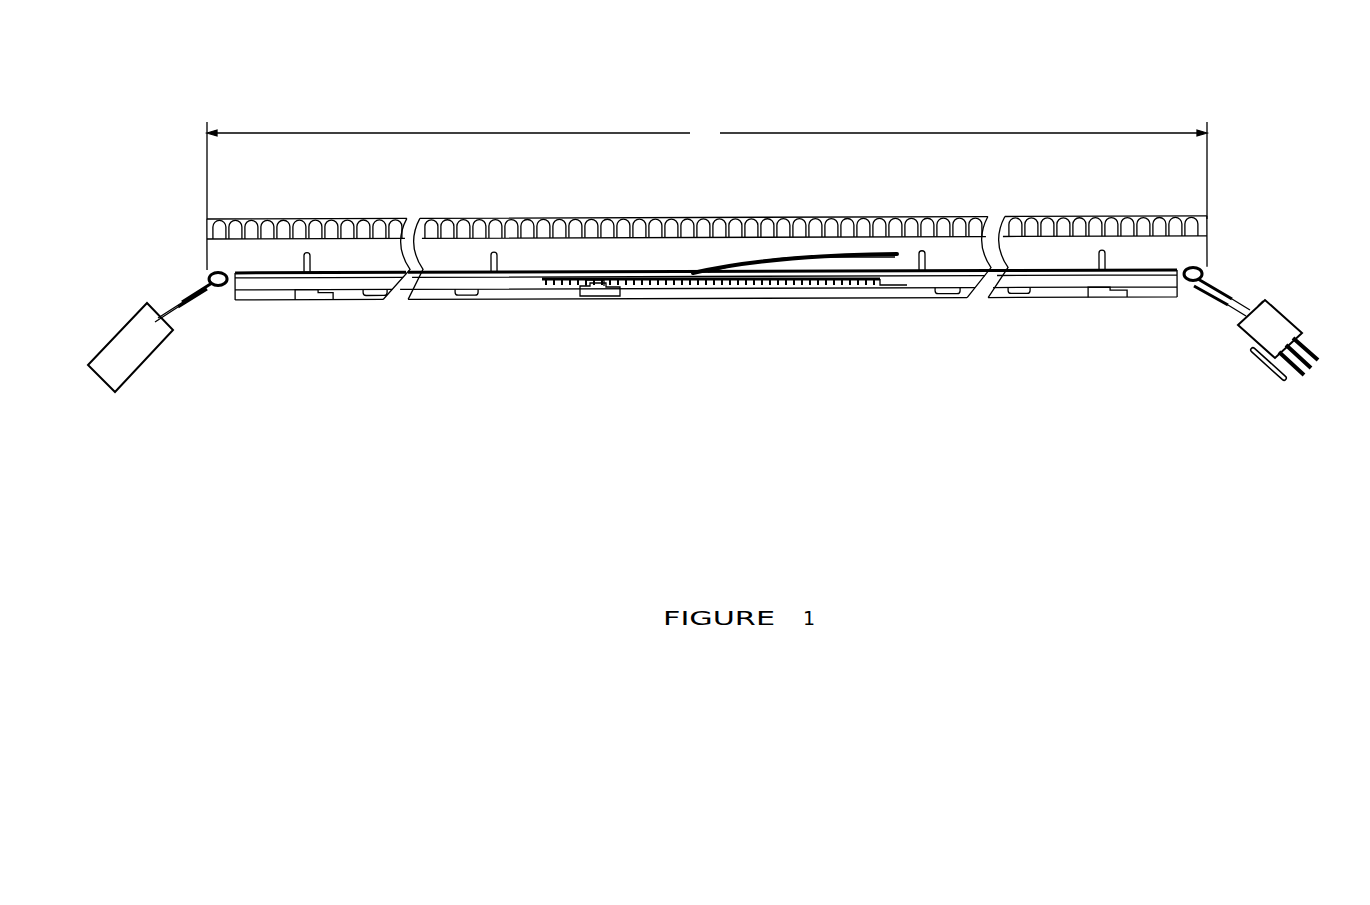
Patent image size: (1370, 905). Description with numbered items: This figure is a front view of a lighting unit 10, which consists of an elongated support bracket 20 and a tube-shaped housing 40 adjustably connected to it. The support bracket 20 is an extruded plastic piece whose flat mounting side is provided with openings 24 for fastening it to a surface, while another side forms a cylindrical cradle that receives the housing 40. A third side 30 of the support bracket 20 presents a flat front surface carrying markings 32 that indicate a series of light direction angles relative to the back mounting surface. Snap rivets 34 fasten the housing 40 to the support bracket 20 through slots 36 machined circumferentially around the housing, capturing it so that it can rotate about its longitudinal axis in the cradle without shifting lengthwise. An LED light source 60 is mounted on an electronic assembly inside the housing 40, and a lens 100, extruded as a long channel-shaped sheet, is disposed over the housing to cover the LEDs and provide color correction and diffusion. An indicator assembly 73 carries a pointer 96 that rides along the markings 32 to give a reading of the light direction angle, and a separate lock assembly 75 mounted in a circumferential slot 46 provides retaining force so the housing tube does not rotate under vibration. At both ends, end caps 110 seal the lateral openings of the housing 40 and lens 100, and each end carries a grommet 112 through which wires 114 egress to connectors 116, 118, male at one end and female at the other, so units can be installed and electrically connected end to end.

The lighting unit 10 is at (138, 120).
The support bracket 20 is at (243, 297).
The openings 24 is at (466, 298).
The third side 30 is at (888, 288).
The markings 32 is at (727, 285).
The snap rivets 34 is at (496, 292).
The slots 36 is at (490, 250).
The housing 40 is at (1207, 217).
The circumferential slot 46 is at (300, 252).
The LED light source 60 is at (373, 220).
The indicator assembly 73 is at (590, 297).
The lock assembly 75 is at (313, 303).
The pointer 96 is at (598, 287).
The lens 100 is at (305, 217).
The end caps 110 is at (203, 238).
The grommet 112 is at (208, 273).
The wires 114 is at (177, 287).
The connector 116 is at (1300, 322).
The connector 118 is at (123, 390).